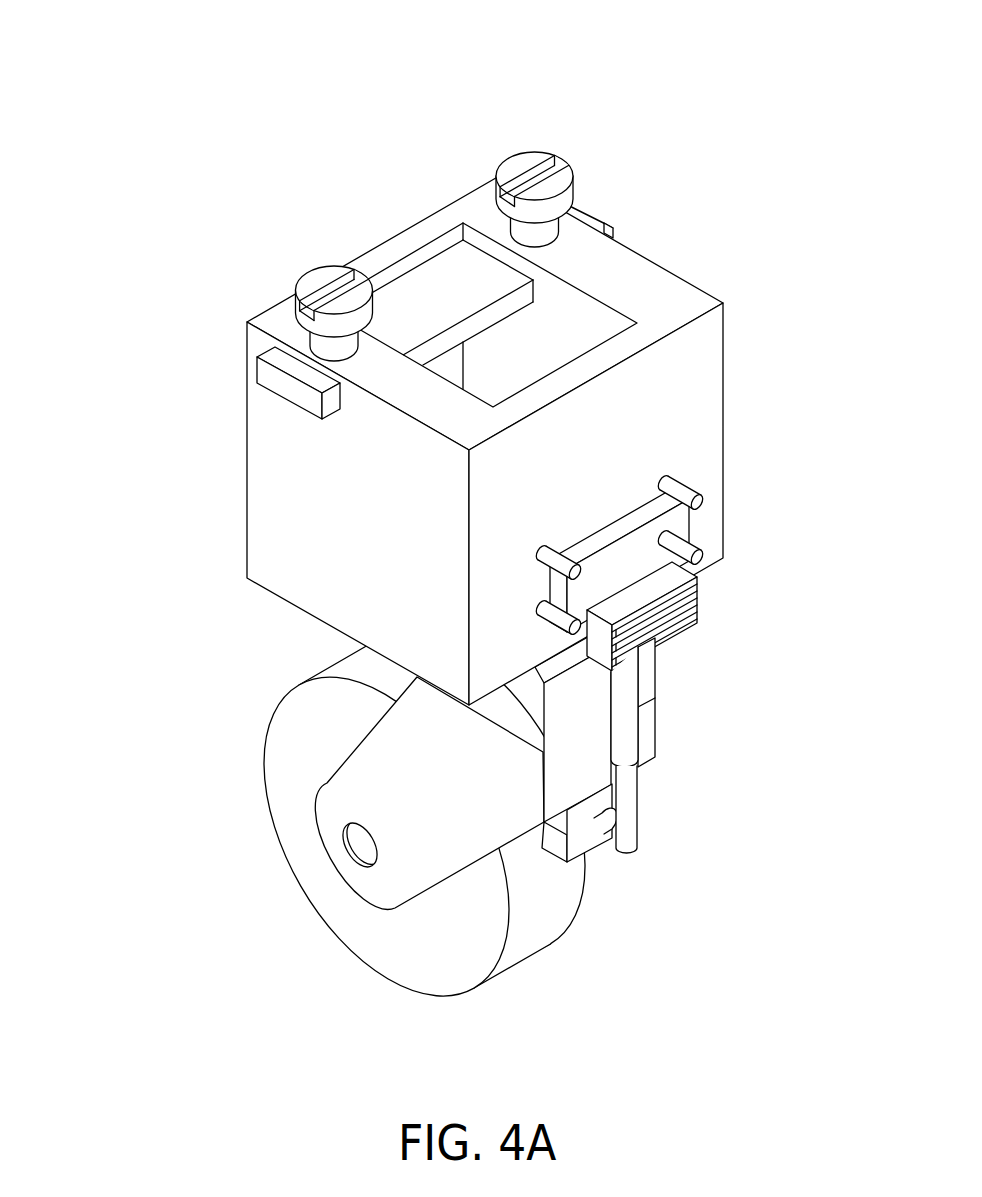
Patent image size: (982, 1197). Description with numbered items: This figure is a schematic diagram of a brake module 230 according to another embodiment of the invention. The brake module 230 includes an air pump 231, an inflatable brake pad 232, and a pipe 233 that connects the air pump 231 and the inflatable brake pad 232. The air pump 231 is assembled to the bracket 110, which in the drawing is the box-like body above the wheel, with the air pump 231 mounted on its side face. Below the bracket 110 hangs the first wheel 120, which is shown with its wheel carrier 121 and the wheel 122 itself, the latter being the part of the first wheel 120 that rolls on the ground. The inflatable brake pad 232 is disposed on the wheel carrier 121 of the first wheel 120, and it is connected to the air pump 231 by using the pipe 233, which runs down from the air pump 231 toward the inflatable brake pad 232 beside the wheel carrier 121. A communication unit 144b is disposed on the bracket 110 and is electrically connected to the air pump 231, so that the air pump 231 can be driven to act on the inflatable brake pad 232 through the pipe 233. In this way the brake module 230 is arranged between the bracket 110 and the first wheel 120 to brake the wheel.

The bracket 110 is at (293, 479).
The communication unit 144b is at (293, 392).
The first wheel 120 is at (148, 733).
The wheel carrier 121 is at (397, 772).
The wheel 122 is at (284, 805).
The brake module 230 is at (806, 3).
The air pump 231 is at (638, 550).
The inflatable brake pad 232 is at (587, 838).
The pipe 233 is at (628, 697).